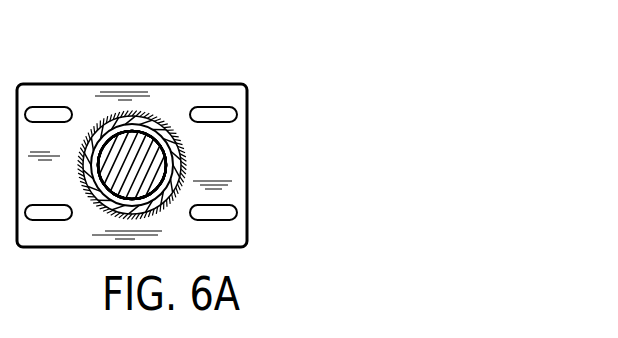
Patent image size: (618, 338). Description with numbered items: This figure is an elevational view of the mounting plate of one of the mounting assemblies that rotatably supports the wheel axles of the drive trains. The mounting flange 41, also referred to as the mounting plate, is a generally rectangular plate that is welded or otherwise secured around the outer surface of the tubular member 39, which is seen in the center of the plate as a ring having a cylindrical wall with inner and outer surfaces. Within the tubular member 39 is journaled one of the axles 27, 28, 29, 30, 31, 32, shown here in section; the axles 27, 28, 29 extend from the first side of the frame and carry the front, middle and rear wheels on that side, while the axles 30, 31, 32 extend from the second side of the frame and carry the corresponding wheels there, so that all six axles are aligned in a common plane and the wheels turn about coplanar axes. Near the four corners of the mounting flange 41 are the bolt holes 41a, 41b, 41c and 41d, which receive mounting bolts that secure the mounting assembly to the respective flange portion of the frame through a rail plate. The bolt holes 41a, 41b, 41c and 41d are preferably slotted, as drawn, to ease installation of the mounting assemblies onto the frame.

The mounting flange 41 is at (255, 70).
The bolt hole 41a is at (49, 112).
The bolt hole 41b is at (222, 115).
The bolt hole 41c is at (47, 213).
The bolt hole 41d is at (220, 215).
The tubular member 39 is at (173, 143).
The axle 27 is at (152, 170).
The axle 28 is at (248, 175).
The axle 29 is at (267, 175).
The axle 30 is at (287, 175).
The axle 31 is at (306, 175).
The axle 32 is at (321, 175).